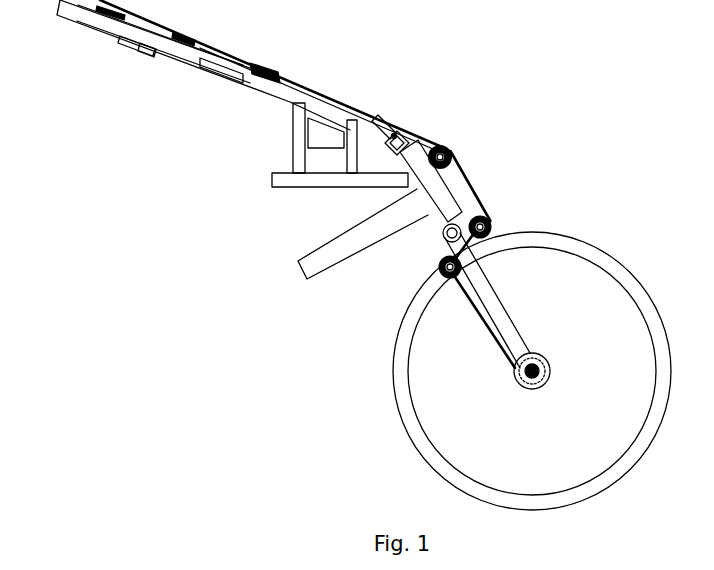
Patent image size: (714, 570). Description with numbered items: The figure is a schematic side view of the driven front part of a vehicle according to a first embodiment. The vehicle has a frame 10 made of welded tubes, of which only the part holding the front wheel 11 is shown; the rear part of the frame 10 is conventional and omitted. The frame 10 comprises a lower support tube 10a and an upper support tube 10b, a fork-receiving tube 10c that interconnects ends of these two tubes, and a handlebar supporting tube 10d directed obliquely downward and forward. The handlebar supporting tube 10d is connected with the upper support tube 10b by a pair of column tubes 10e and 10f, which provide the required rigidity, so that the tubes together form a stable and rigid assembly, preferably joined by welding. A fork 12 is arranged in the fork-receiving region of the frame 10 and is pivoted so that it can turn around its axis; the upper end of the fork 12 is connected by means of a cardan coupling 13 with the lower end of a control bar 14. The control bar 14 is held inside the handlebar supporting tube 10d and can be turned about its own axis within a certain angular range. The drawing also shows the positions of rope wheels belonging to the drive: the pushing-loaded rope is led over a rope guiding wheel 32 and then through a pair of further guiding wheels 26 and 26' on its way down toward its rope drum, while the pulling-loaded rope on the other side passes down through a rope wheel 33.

The frame 10 is at (212, 222).
The lower support tube 10a is at (303, 277).
The upper support tube 10b is at (272, 180).
The fork-receiving tube 10c is at (417, 196).
The handlebar supporting tube 10d is at (290, 101).
The column tube 10e is at (290, 146).
The column tube 10f is at (348, 152).
The front wheel 11 is at (393, 404).
The fork 12 is at (505, 328).
The cardan coupling 13 is at (403, 135).
The control bar 14 is at (378, 116).
The rope guiding wheel 26 is at (405, 277).
The rope guiding wheel 26' is at (532, 204).
The rope guiding wheel 32 is at (500, 126).
The rope wheel 33 is at (452, 148).